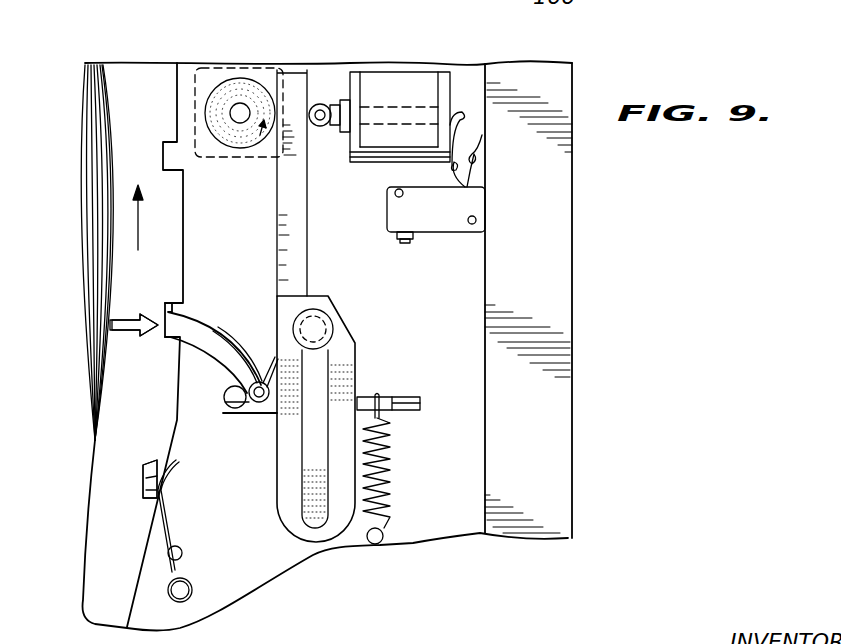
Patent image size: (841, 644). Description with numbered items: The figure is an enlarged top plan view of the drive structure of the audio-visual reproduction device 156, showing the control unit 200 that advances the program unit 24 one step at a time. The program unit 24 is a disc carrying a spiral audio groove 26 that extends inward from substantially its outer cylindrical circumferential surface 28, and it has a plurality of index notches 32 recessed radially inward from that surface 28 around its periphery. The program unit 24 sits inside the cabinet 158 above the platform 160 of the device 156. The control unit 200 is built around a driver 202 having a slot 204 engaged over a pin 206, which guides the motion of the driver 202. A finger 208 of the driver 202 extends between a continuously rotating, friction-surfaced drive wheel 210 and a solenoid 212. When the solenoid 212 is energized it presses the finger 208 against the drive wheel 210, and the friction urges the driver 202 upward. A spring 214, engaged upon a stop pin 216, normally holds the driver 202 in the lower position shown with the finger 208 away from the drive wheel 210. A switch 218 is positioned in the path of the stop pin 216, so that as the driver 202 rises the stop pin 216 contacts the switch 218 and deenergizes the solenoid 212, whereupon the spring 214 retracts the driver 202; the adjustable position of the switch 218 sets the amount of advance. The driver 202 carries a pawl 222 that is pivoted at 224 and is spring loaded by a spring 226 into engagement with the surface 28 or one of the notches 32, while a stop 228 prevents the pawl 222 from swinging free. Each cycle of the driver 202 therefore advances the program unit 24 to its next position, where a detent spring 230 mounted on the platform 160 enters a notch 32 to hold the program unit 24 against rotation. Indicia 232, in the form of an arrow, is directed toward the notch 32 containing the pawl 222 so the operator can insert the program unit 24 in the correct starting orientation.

The program unit 24 is at (98, 363).
The spiral audio groove 26 is at (103, 231).
The outer cylindrical circumferential surface 28 is at (173, 441).
The index notches 32 is at (170, 167).
The audio-visual reproduction device 156 is at (665, 2).
The cabinet 158 is at (550, 306).
The platform 160 is at (252, 567).
The control unit 200 is at (347, 17).
The driver 202 is at (355, 419).
The slot 204 is at (325, 397).
The pin 206 is at (322, 327).
The finger 208 is at (292, 242).
The drive wheel 210 is at (252, 40).
The solenoid 212 is at (437, 40).
The spring 214 is at (387, 482).
The stop pin 216 is at (408, 410).
The switch 218 is at (485, 207).
The pawl 222 is at (198, 328).
The pivot 224 is at (256, 412).
The spring 226 is at (243, 370).
The stop 228 is at (241, 409).
The detent spring 230 is at (160, 488).
The indicia 232 is at (130, 326).